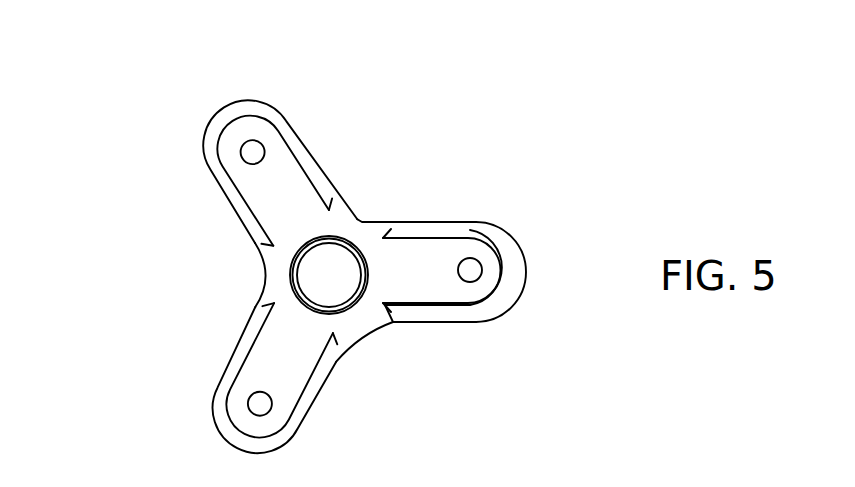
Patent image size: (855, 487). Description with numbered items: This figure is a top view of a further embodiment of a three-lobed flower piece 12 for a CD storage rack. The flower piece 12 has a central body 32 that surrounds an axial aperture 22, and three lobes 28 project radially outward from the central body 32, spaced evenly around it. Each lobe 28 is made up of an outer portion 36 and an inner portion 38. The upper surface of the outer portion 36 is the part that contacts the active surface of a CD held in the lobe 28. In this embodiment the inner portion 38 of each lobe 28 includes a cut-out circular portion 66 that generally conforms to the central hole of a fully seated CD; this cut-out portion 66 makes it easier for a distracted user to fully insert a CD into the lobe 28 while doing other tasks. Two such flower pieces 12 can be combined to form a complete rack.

The flower piece 12 is at (132, 93).
The axial aperture 22 is at (350, 307).
The central body 32 is at (353, 230).
The lobe 28 is at (492, 200).
The cut-out circular portion 66 is at (482, 268).
The outer portion 36 is at (489, 300).
The inner portion 38 is at (440, 287).